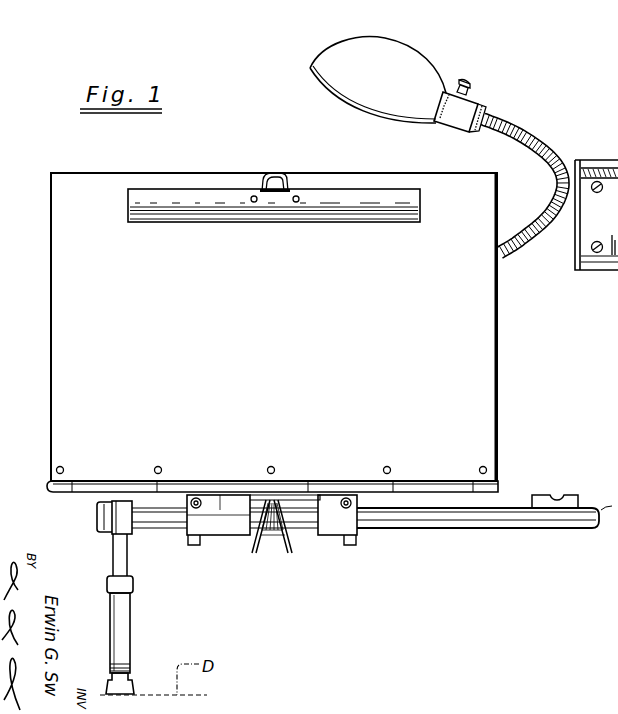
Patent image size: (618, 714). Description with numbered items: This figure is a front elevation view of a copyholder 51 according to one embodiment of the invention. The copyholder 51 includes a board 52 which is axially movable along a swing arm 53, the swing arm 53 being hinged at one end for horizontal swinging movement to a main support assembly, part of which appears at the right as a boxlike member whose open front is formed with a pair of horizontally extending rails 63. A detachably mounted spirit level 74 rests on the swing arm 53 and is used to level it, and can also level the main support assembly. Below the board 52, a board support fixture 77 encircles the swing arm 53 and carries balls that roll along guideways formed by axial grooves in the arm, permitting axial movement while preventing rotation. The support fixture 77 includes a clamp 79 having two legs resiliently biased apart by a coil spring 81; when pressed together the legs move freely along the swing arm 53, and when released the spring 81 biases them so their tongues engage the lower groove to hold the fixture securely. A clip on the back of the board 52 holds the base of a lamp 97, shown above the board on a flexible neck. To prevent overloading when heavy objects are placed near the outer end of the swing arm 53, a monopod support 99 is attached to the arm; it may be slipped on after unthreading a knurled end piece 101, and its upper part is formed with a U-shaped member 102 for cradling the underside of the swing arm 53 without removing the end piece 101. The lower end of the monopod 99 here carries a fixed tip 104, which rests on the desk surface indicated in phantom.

The copyholder 51 is at (62, 157).
The board 52 is at (497, 364).
The swing arm 53 is at (456, 529).
The rails 63 is at (617, 213).
The spirit level 74 is at (554, 494).
The board support fixture 77 is at (325, 538).
The clamp 79 is at (248, 539).
The coil spring 81 is at (272, 540).
The lamp 97 is at (481, 100).
The monopod support 99 is at (132, 623).
The knurled end piece 101 is at (103, 520).
The U-shaped member 102 is at (121, 523).
The fixed tip 104 is at (128, 690).